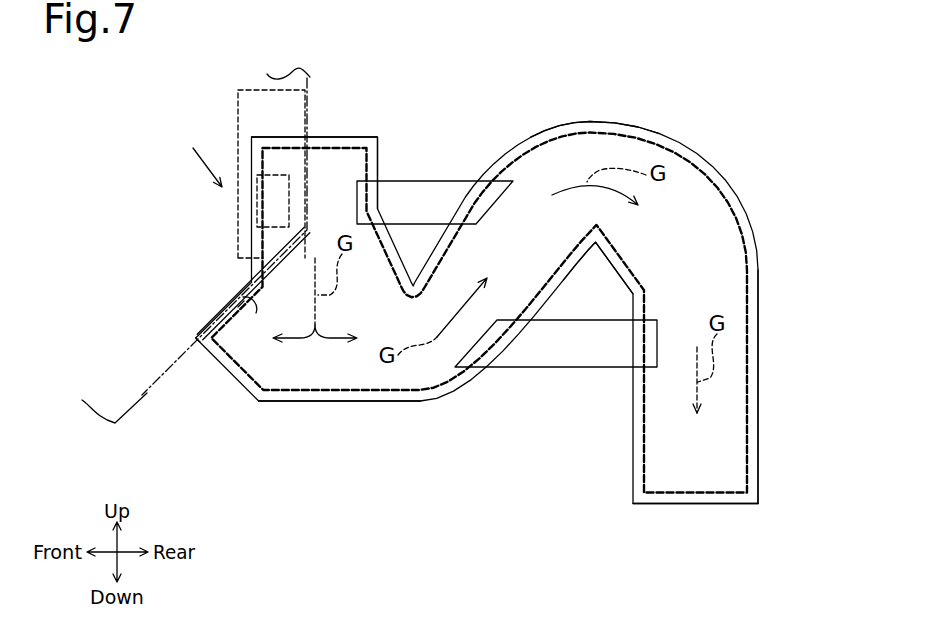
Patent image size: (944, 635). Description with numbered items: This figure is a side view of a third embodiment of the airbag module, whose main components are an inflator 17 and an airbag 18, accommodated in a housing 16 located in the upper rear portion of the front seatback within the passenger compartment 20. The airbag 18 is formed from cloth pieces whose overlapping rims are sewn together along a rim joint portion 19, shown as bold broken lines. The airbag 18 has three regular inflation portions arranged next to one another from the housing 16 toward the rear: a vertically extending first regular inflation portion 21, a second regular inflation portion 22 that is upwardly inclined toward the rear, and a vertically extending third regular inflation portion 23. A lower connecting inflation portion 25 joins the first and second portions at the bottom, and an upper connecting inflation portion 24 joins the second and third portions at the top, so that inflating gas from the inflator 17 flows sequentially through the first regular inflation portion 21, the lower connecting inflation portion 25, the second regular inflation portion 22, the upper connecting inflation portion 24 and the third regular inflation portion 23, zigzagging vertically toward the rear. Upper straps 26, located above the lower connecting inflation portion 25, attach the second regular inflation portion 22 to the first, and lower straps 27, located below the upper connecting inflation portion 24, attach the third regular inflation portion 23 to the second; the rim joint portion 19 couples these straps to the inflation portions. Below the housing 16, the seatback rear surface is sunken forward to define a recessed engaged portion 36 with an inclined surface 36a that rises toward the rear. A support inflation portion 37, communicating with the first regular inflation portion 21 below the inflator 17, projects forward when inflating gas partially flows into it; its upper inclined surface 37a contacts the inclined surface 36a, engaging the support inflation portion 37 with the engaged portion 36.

The housing 16 is at (272, 92).
The inflator 17 is at (290, 194).
The airbag 18 is at (761, 128).
The rim joint portion 19 is at (642, 470).
The passenger compartment 20 is at (448, 84).
The first regular inflation portion 21 is at (352, 160).
The second regular inflation portion 22 is at (527, 278).
The third regular inflation portion 23 is at (733, 343).
The upper connecting inflation portion 24 is at (611, 143).
The lower connecting inflation portion 25 is at (410, 378).
The upper strap 26 is at (453, 190).
The lower strap 27 is at (557, 358).
The engaged portion 36 is at (147, 400).
The inclined surface 36a is at (240, 307).
The support inflation portion 37 is at (222, 316).
The inclined surface 37a is at (200, 340).